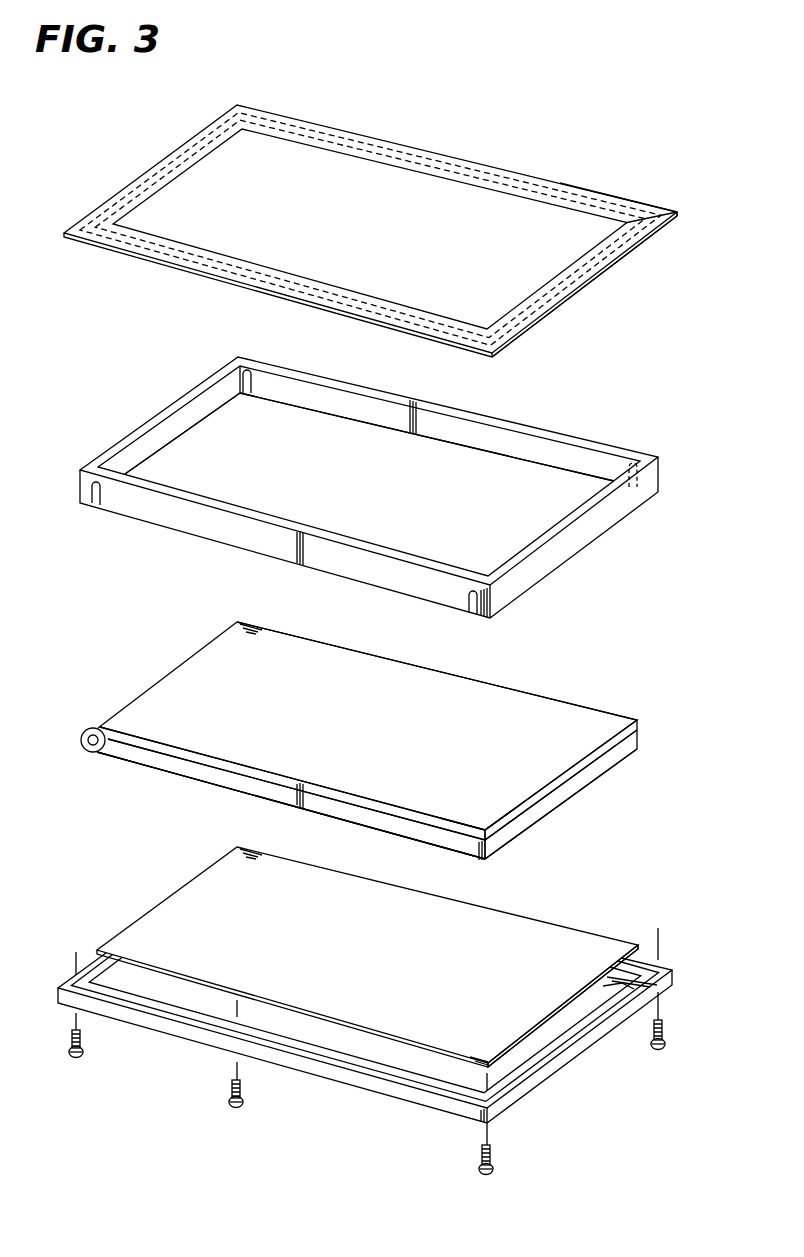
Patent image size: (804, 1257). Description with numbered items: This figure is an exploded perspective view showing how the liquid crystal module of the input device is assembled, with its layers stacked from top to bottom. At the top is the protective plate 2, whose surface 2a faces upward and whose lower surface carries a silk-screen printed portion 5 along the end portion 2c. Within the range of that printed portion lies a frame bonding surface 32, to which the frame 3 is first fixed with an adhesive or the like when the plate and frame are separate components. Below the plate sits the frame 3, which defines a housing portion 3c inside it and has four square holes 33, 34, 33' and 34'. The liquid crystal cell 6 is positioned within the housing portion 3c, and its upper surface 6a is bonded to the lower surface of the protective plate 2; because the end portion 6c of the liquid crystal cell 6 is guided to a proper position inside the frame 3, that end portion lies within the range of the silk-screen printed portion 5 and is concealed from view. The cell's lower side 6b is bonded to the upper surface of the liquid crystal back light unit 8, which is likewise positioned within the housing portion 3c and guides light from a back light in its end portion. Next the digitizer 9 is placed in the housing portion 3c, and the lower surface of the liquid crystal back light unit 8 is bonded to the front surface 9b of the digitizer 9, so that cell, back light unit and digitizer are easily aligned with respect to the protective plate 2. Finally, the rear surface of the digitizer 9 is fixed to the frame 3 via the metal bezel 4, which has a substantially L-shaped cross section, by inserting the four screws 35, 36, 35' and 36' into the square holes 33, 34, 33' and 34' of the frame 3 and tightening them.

The protective plate 2 is at (323, 193).
The display surface of panel 2a is at (422, 194).
The frame bonding surface 32 is at (537, 183).
The silk-screen printed portion 5 is at (613, 197).
The end portion of the protective plate 2c is at (622, 257).
The frame 3 is at (563, 542).
The housing portion 3c is at (472, 484).
The square hole 33 is at (85, 523).
The square hole 33' is at (240, 412).
The square hole 34 is at (463, 630).
The square hole 34' is at (637, 438).
The liquid crystal cell 6 is at (578, 721).
The upper surface of the liquid crystal cell 6a is at (604, 734).
The lower layer of light guide plate 6b is at (604, 757).
The liquid crystal back light unit 8 is at (575, 783).
The end portion of the liquid crystal cell 6c is at (535, 806).
The digitizer 9 is at (518, 948).
The front surface of the digitizer 9b is at (603, 957).
The metal bezel 4 is at (567, 1050).
The screw 35 is at (68, 1037).
The screw 35' is at (273, 1066).
The screw 36 is at (523, 1124).
The screw 36' is at (699, 992).